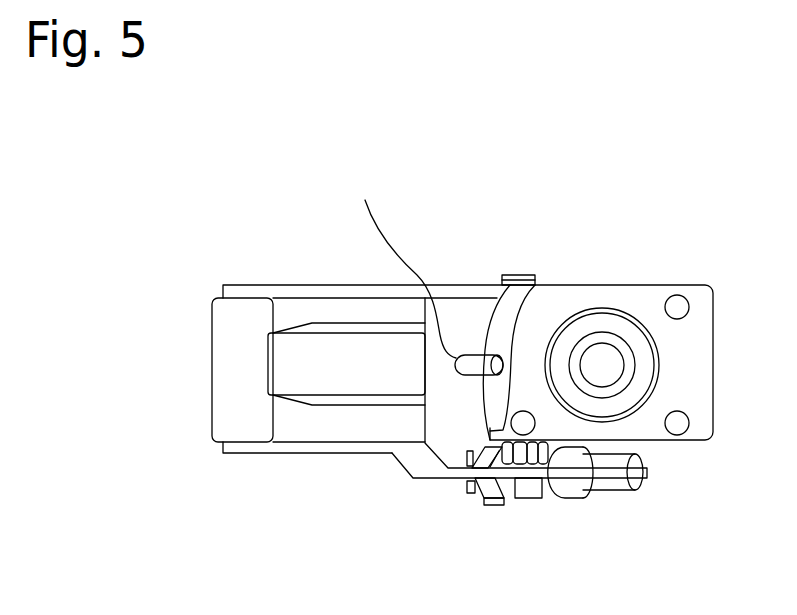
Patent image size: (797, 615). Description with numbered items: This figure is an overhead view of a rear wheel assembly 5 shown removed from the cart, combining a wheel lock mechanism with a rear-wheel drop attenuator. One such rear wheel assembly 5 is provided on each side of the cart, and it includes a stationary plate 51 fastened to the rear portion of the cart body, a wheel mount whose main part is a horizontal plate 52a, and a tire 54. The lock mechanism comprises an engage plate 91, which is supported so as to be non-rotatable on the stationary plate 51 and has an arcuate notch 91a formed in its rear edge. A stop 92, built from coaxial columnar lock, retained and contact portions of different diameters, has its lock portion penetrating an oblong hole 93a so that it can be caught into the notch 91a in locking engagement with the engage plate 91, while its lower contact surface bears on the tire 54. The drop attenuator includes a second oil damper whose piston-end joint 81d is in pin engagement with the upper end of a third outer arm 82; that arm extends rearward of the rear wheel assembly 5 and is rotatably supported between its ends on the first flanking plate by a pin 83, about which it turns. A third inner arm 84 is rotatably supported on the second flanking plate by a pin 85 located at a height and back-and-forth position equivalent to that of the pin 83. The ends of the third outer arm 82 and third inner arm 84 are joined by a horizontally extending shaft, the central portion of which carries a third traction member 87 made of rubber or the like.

The rear wheel assembly 5 is at (447, 161).
The stationary plate 51 is at (695, 303).
The horizontal plate 52a is at (424, 443).
The tire 54 is at (329, 350).
The piston-end joint 81d is at (603, 486).
The third outer arm 82 is at (293, 452).
The pin 83 is at (522, 452).
The third inner arm 84 is at (283, 295).
The pin 85 is at (520, 275).
The third traction member 87 is at (232, 393).
The engage plate 91 is at (523, 303).
The arcuate notch 91a is at (505, 346).
The stop 92 is at (500, 345).
The oblong hole 93a is at (394, 262).